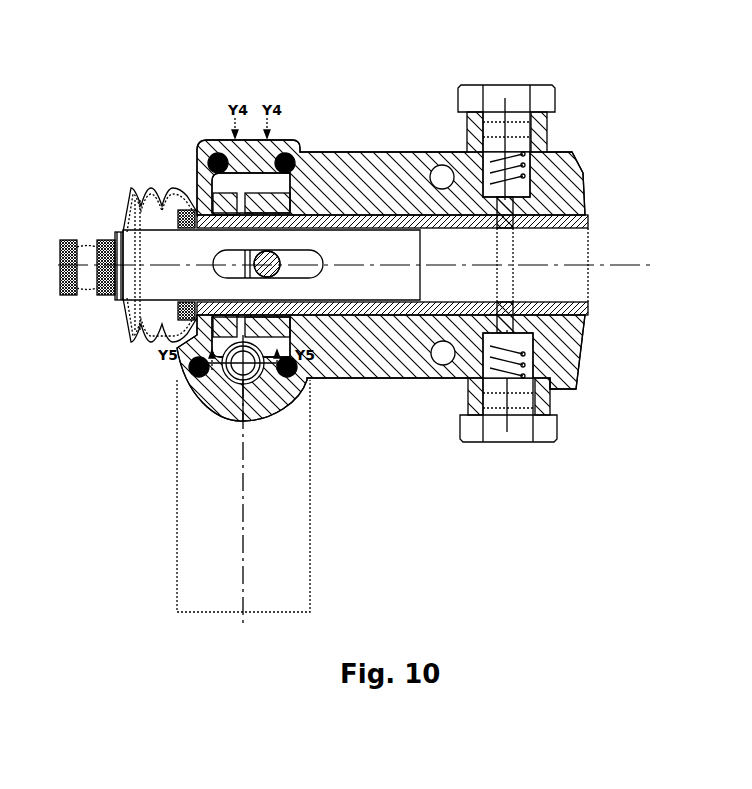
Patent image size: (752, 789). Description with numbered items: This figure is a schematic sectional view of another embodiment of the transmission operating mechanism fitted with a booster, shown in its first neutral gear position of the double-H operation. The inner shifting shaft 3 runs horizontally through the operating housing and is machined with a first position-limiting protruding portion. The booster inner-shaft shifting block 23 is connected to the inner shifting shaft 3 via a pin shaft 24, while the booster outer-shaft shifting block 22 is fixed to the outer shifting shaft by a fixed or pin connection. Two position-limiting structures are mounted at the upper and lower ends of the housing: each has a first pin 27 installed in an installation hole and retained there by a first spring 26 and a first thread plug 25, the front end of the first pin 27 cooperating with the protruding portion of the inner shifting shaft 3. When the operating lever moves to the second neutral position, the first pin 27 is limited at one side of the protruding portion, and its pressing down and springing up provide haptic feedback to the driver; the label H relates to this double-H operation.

The stroke H is at (224, 236).
The booster outer-shaft shifting block 22 is at (212, 252).
The booster inner-shaft shifting block 23 is at (253, 251).
The pin shaft 24 is at (279, 250).
The first thread plug 25 is at (507, 102).
The first spring 26 is at (518, 150).
The first pin 27 is at (512, 190).
The inner shifting shaft 3 is at (507, 264).